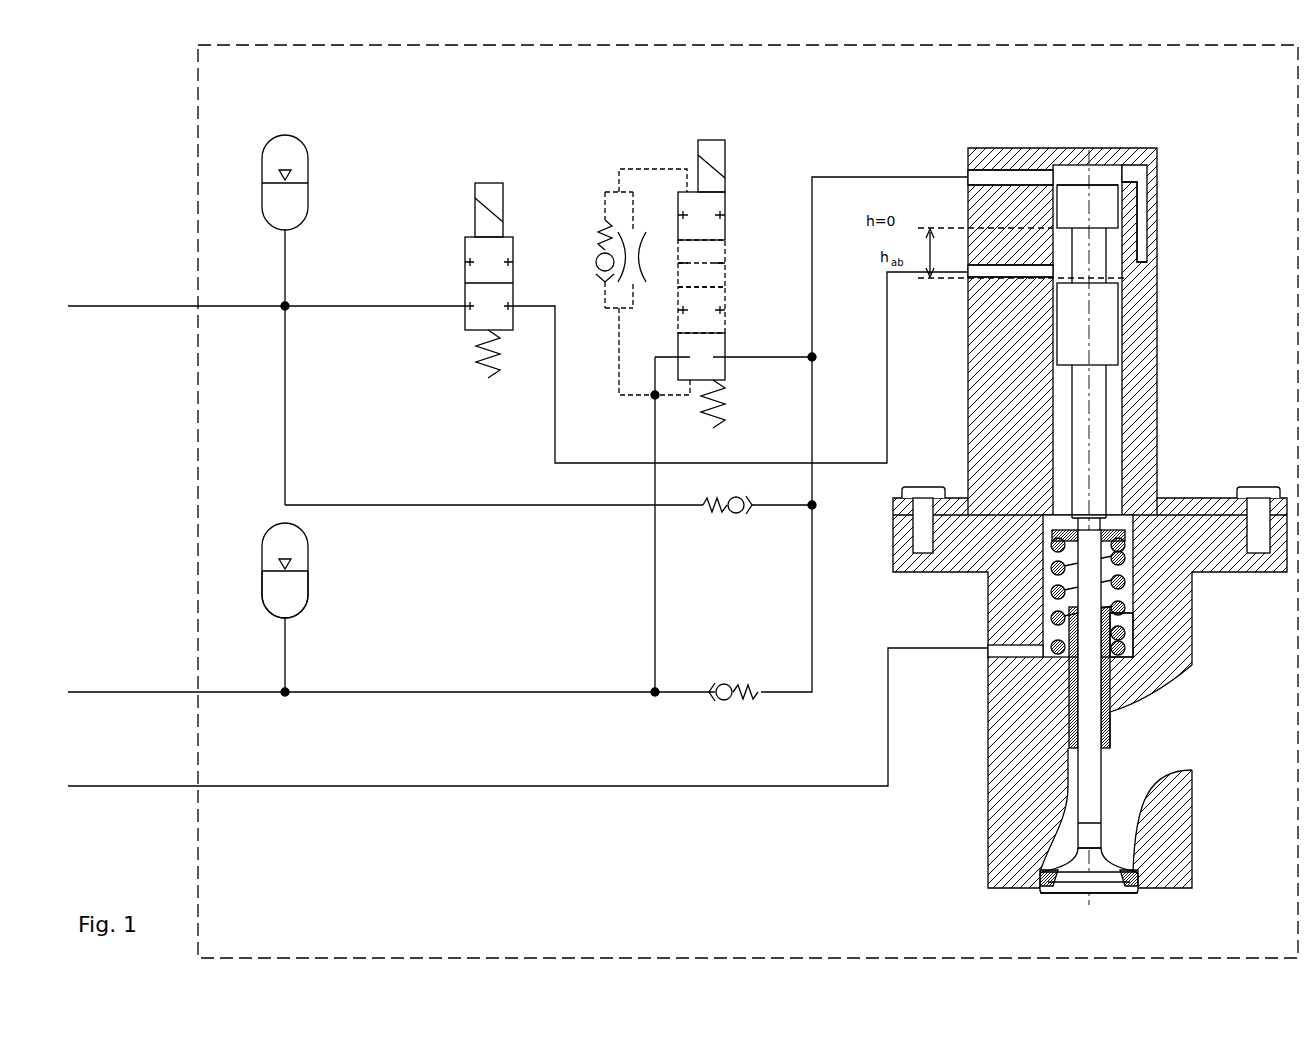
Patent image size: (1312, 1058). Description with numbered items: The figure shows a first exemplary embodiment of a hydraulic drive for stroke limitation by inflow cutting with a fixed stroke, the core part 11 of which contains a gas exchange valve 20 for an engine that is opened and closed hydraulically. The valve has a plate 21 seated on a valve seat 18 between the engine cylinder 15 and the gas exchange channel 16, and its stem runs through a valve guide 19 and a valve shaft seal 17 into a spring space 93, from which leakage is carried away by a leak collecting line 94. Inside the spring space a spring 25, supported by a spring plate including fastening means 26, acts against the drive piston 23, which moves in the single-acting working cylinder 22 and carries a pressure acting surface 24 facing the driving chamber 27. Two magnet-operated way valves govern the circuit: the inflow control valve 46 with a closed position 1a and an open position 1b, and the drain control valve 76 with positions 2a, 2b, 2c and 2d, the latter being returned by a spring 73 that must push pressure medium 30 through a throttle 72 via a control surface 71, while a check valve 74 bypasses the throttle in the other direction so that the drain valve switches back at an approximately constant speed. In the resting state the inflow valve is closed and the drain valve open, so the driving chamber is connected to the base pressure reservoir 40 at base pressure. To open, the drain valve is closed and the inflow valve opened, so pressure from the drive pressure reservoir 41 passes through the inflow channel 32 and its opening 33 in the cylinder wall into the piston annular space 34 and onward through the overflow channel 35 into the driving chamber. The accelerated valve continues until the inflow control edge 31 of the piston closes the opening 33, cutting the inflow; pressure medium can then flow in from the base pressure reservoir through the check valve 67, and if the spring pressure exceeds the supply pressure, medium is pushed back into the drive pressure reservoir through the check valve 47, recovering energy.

The core part of the drive including one or more gas exchange valves 11 is at (748, 501).
The drive pressure reservoir 41 is at (292, 150).
The inflow control valve 46 is at (466, 280).
The closed position of the inflow control valve 1a is at (487, 317).
The open position of the inflow control valve 1b is at (489, 270).
The pressure acting area of drain control valve 71 is at (686, 272).
The open position of the drain control valve 2a is at (701, 356).
The switching position of the drain control valve 2b is at (701, 310).
The release position of the drain control valve 2c is at (701, 263).
The closed position of the drain control valve 2d is at (701, 216).
The drain control valve 76 is at (727, 268).
The spring for returning drain control valve 73 is at (728, 404).
The check valve of drain control valve 74 is at (625, 282).
The throttle of the drain control valve 72 is at (643, 250).
The refeed-back check valve 47 is at (726, 520).
The check valve between drive chamber and base pressure reservoir 67 is at (733, 707).
The base pressure reservoir 40 is at (292, 548).
The pressure medium 30 is at (300, 600).
The leak collecting line 94 is at (376, 788).
The driving chamber 27 is at (1070, 175).
The working cylinder 22 is at (1102, 165).
The pressure acting surface of the drive piston 24 is at (1106, 183).
The overflow channel 35 is at (1140, 200).
The inflow control edge of the drive piston 31 is at (1115, 235).
The overflow space in the piston 34 is at (1112, 262).
The inflow channel 32 is at (1003, 270).
The control edge of the inflow channel in the cylinder wall 33 is at (1053, 273).
The drive piston 23 is at (1100, 325).
The spring plate including fastening means 26 is at (1060, 535).
The spring 25 is at (1062, 597).
The valve shaft seal 17 is at (1125, 615).
The spring space 93 is at (1125, 628).
The valve guide 19 is at (1069, 718).
The gas exchange valve 20 is at (1090, 790).
The gas exchange channel 16 is at (1120, 769).
The engine cylinder 15 is at (1089, 888).
The plate of the gas exchange valve 21 is at (1072, 893).
The valve seat 18 is at (1043, 880).